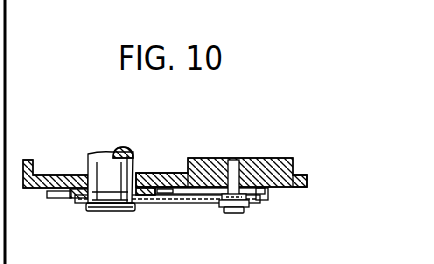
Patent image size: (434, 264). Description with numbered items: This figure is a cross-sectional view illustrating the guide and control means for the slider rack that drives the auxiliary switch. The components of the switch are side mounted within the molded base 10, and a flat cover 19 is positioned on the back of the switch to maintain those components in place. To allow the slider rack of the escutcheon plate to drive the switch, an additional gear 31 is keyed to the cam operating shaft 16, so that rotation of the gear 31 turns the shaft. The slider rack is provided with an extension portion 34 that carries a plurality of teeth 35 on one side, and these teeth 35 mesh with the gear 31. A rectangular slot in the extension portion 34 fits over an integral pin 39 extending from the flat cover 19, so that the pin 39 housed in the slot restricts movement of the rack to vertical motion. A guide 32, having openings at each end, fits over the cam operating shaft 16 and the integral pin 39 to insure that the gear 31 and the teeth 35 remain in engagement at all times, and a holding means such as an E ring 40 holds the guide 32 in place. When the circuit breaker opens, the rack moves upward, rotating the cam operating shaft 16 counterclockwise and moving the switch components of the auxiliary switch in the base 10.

The molded base 10 is at (281, 158).
The cam operating shaft 16 is at (120, 212).
The flat cover 19 is at (291, 189).
The gear 31 is at (73, 200).
The guide 32 is at (196, 205).
The extension portion 34 is at (265, 199).
The teeth 35 is at (163, 172).
The integral pin 39 is at (236, 166).
The E ring 40 is at (87, 203).